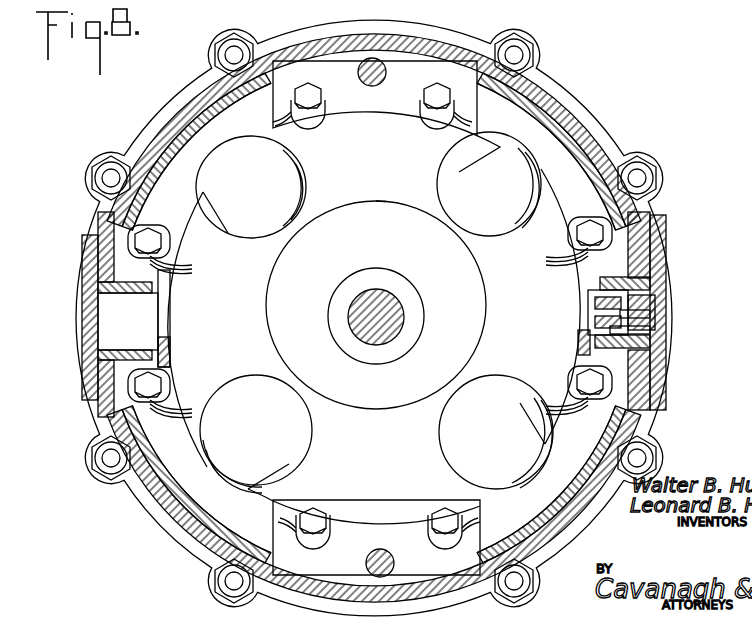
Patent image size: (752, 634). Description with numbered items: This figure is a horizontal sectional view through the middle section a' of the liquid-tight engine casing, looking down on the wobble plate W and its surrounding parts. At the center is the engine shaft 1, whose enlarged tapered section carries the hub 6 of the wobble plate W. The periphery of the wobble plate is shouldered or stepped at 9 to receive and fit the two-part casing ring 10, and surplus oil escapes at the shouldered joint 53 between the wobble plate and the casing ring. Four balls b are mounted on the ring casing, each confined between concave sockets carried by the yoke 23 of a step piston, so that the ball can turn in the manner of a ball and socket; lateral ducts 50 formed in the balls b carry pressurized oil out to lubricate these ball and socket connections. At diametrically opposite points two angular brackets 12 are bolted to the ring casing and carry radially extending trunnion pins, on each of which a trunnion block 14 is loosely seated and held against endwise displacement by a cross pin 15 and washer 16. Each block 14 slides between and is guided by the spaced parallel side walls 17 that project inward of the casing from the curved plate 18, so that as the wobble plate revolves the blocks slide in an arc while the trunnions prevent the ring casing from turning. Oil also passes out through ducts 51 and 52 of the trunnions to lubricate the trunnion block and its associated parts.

The engine shaft 1 is at (378, 335).
The hub 6 is at (400, 287).
The shouldered periphery 9 is at (376, 305).
The casing ring 10 is at (374, 335).
The angular bracket 12 is at (171, 322).
The trunnion block 14 is at (116, 340).
The cross pin 15 is at (656, 318).
The washer 16 is at (660, 337).
The side walls 17 is at (134, 286).
The curved plate 18 is at (84, 313).
The yoke 23 is at (167, 150).
The lateral ducts 50 is at (260, 185).
The trunnion duct 51 is at (590, 298).
The trunnion duct 52 is at (660, 305).
The shouldered joint 53 is at (364, 203).
The wobble plate w is at (430, 159).
The middle section a' is at (374, 318).
The ball b is at (235, 215).